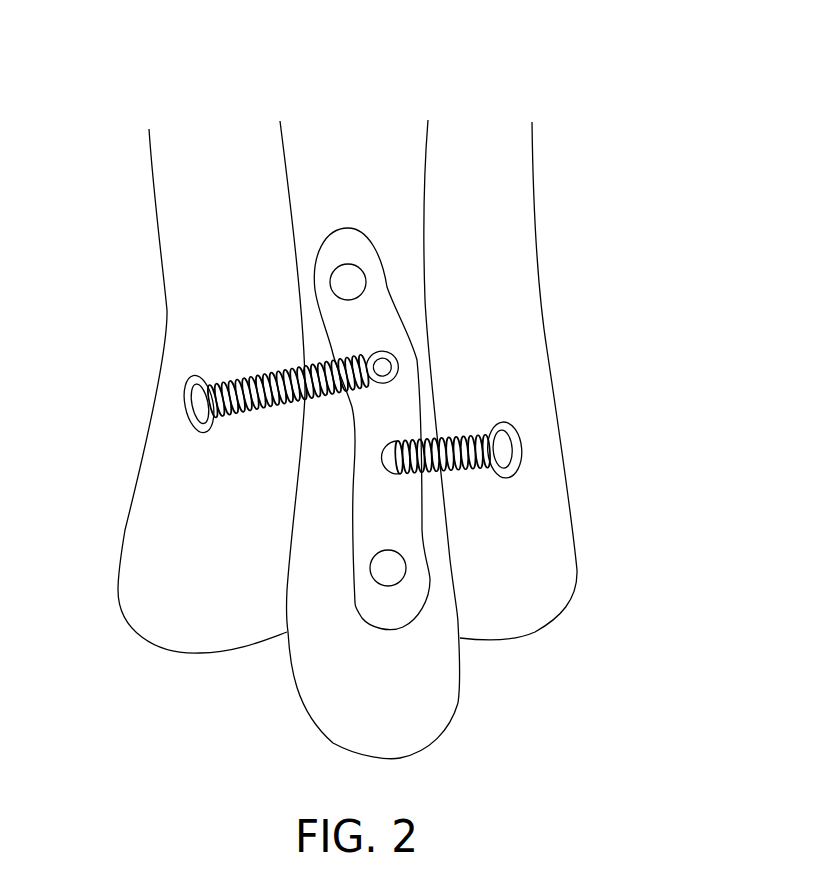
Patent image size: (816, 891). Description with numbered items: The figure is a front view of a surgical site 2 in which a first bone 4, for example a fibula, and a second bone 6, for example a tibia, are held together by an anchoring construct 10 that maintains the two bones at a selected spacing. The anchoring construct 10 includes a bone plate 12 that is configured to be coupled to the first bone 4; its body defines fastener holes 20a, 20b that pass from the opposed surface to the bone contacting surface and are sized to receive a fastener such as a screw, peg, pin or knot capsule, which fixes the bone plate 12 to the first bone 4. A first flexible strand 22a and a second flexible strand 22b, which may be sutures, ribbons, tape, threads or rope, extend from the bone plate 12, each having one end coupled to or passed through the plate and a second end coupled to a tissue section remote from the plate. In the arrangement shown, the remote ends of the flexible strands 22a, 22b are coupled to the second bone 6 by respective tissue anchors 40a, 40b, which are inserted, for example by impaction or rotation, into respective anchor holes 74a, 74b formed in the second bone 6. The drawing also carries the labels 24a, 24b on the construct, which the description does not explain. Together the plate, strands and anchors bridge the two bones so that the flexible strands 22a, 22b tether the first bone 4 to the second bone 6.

The surgical site 2 is at (500, 88).
The first bone 4 is at (435, 697).
The second bone 6 is at (192, 198).
The anchoring construct 10 is at (380, 205).
The bone plate 12 is at (395, 415).
The fastener hole 20a is at (363, 272).
The fastener hole 20b is at (407, 573).
The first flexible strand 22a is at (243, 413).
The second flexible strand 22b is at (457, 436).
The first screw aperture 24a is at (398, 352).
The second screw aperture 24b is at (377, 470).
The tissue anchor 40a is at (226, 422).
The tissue anchor 40b is at (523, 498).
The anchor hole 74a is at (190, 418).
The anchor hole 74b is at (521, 440).